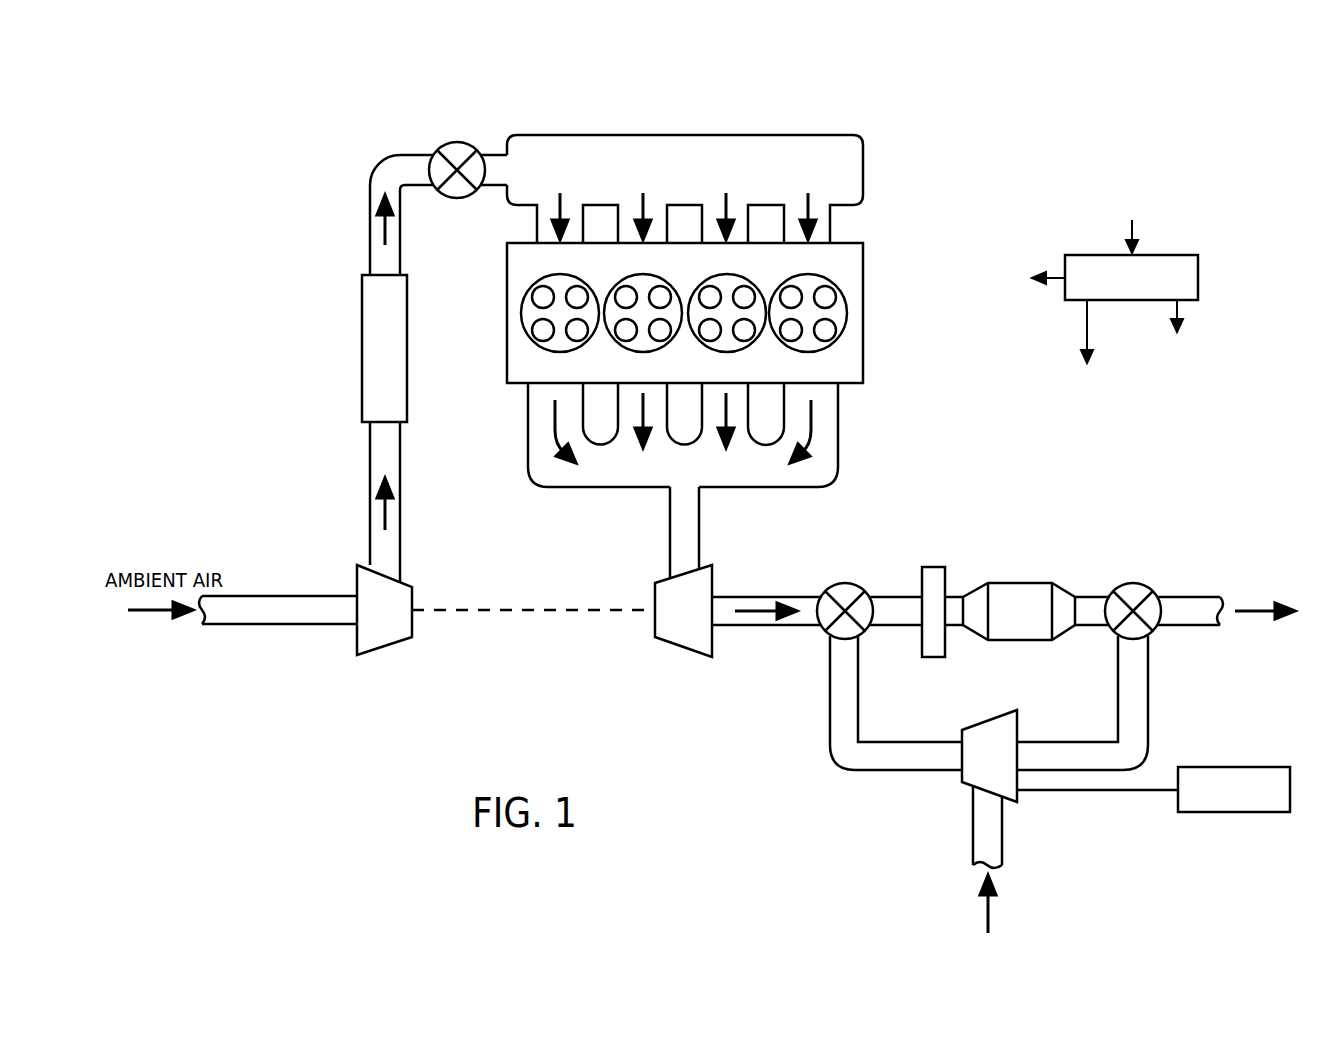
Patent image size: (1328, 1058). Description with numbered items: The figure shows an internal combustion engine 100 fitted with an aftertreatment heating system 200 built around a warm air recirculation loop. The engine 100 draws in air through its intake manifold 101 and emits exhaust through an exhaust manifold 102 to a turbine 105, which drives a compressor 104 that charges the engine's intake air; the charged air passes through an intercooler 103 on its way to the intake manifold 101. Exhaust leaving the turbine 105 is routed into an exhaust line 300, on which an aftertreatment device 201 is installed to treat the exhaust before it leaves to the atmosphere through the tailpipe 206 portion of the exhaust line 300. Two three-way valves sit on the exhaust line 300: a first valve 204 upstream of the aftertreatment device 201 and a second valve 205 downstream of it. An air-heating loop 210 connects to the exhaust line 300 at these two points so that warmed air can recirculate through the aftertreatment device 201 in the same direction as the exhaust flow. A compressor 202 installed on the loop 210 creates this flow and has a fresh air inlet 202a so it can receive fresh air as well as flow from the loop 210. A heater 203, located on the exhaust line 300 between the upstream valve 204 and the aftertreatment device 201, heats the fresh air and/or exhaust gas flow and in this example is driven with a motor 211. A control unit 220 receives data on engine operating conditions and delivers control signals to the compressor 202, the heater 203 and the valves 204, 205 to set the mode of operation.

The internal combustion engine 100 is at (852, 65).
The intake manifold 101 is at (685, 135).
The exhaust manifold 102 is at (838, 443).
The intercooler 103 is at (362, 348).
The compressor 104 is at (385, 648).
The turbine 105 is at (683, 650).
The exhaust line 300 is at (765, 627).
The aftertreatment heating system 200 is at (1135, 500).
The aftertreatment device 201 is at (1018, 583).
The compressor 202 is at (985, 718).
The fresh air inlet 202a is at (1002, 828).
The heater 203 is at (932, 567).
The first valve 204 is at (843, 583).
The second valve 205 is at (1132, 583).
The tailpipe 206 is at (1187, 627).
The air-heating loop 210 is at (829, 699).
The motor 211 is at (1233, 812).
The control unit 220 is at (1198, 267).